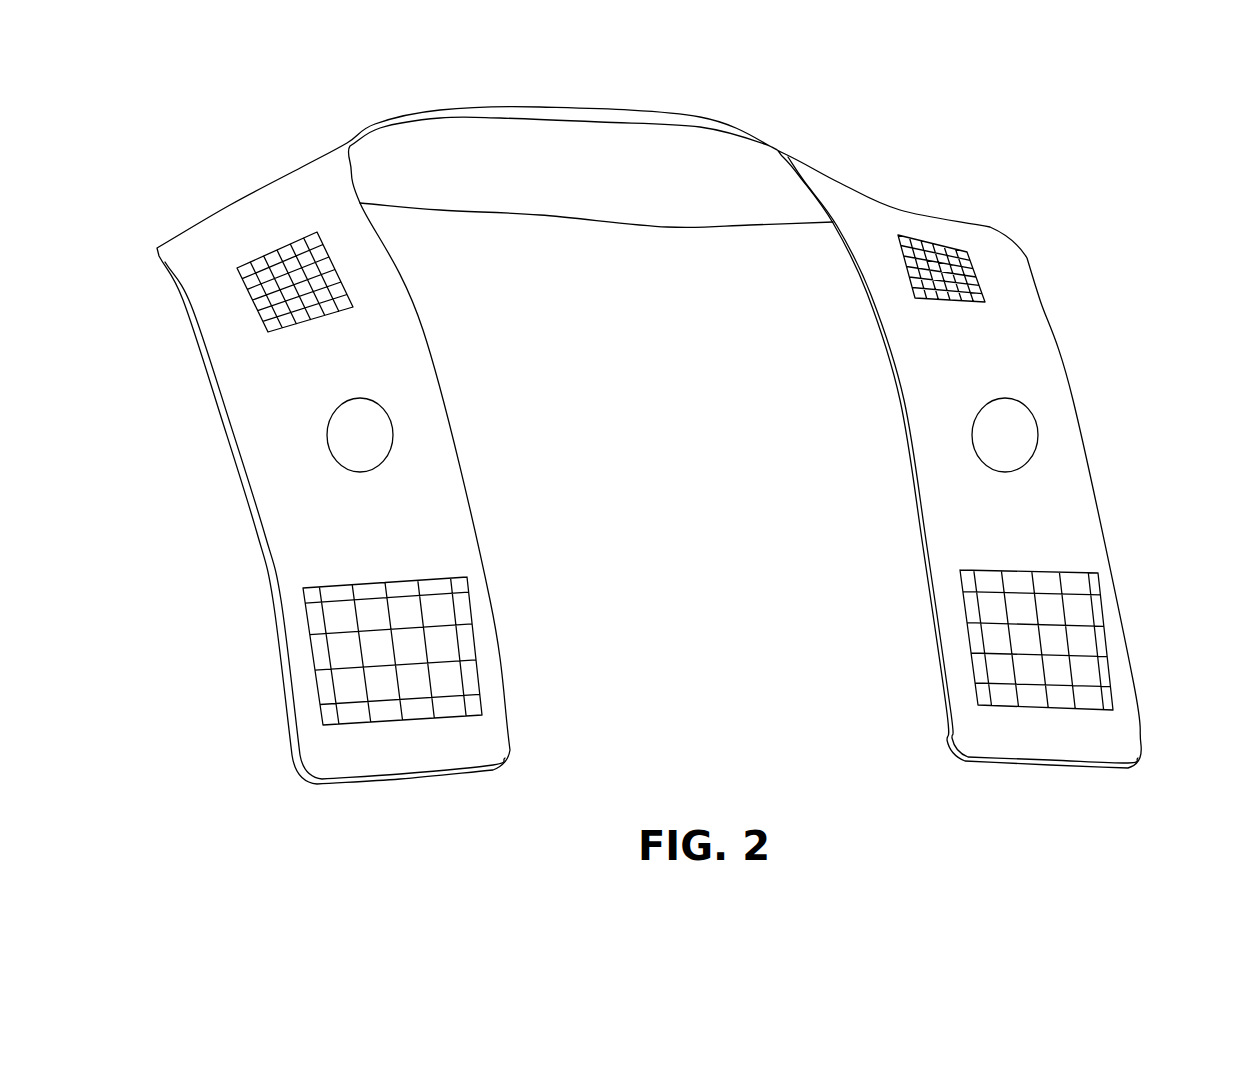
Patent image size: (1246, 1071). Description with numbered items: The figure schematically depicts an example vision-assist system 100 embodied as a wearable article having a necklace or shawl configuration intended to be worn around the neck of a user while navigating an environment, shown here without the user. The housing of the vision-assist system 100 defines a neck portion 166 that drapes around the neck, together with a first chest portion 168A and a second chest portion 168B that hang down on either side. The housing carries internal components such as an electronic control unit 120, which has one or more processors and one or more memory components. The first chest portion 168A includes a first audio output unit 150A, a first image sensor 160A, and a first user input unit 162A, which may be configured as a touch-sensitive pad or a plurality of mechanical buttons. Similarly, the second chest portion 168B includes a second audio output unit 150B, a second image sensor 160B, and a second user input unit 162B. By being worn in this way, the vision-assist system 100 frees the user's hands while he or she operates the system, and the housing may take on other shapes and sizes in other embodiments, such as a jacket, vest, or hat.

The vision-assist system 100 is at (1073, 197).
The electronic control unit 120 is at (300, 165).
The neck portion 166 is at (538, 108).
The first chest portion 168A is at (268, 488).
The second chest portion 168B is at (1023, 347).
The first audio output unit 150A is at (256, 311).
The second audio output unit 150B is at (933, 243).
The first image sensor 160A is at (327, 433).
The second image sensor 160B is at (1040, 438).
The first user input unit 162A is at (318, 698).
The second user input unit 162B is at (1116, 688).